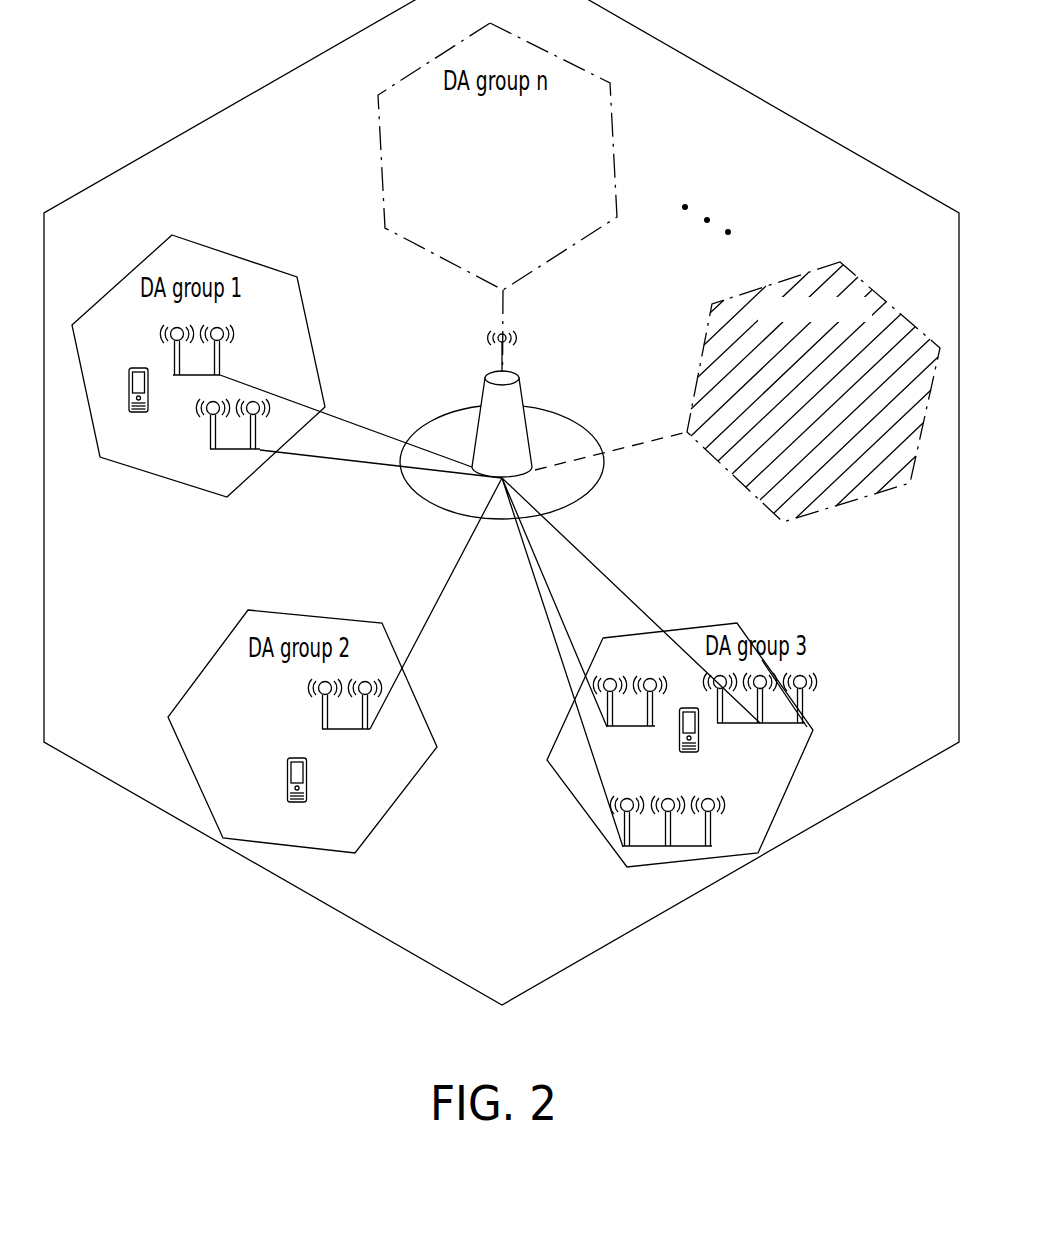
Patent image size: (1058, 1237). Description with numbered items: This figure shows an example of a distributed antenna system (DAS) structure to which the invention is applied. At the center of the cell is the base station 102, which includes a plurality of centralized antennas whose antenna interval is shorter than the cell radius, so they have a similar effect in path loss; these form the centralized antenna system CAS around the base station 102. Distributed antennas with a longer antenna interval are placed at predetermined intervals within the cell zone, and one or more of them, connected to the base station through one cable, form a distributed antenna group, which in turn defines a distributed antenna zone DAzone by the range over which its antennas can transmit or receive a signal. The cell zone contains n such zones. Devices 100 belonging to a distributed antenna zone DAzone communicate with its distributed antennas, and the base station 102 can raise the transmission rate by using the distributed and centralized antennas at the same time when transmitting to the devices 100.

The device 100 is at (414, 603).
The base station 102 is at (523, 393).
The centralized antenna system CAS is at (502, 462).
The DA zone DAzone is at (823, 502).